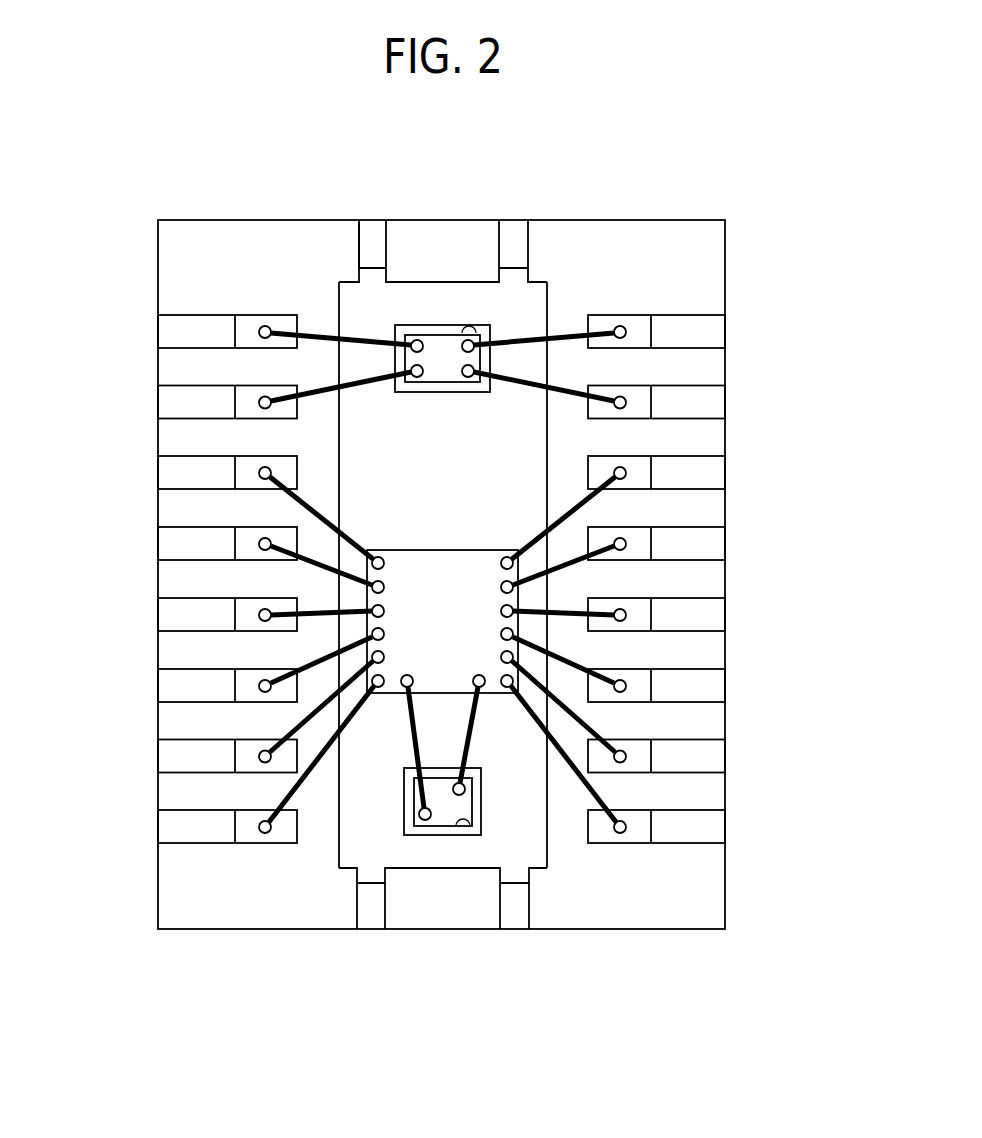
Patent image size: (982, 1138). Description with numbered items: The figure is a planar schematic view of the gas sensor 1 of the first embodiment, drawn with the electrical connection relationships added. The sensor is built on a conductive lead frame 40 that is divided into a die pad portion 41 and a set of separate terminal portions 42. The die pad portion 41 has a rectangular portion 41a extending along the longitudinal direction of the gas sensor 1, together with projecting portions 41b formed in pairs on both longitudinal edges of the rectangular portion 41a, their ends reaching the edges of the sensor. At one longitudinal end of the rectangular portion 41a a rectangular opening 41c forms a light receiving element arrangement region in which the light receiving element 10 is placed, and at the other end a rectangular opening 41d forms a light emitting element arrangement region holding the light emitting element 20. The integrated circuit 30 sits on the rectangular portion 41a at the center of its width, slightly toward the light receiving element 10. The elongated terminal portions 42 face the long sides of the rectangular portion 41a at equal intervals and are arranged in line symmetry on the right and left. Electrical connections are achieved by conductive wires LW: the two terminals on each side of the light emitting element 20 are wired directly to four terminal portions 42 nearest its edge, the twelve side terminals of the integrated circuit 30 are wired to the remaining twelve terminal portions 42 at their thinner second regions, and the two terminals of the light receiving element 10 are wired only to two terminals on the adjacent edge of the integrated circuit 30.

The gas sensor 1 is at (695, 187).
The light receiving element 10 is at (443, 807).
The light emitting element 20 is at (468, 357).
The integrated circuit 30 is at (490, 596).
The conductive lead frame 40 is at (285, 987).
The die pad portion 41 is at (350, 855).
The rectangular portion 41a is at (421, 298).
The projecting portion 41b is at (368, 247).
The rectangular opening 41c is at (462, 333).
The rectangular opening 41d is at (463, 826).
The terminal portion 42 is at (203, 828).
The conductive wire LW is at (528, 385).